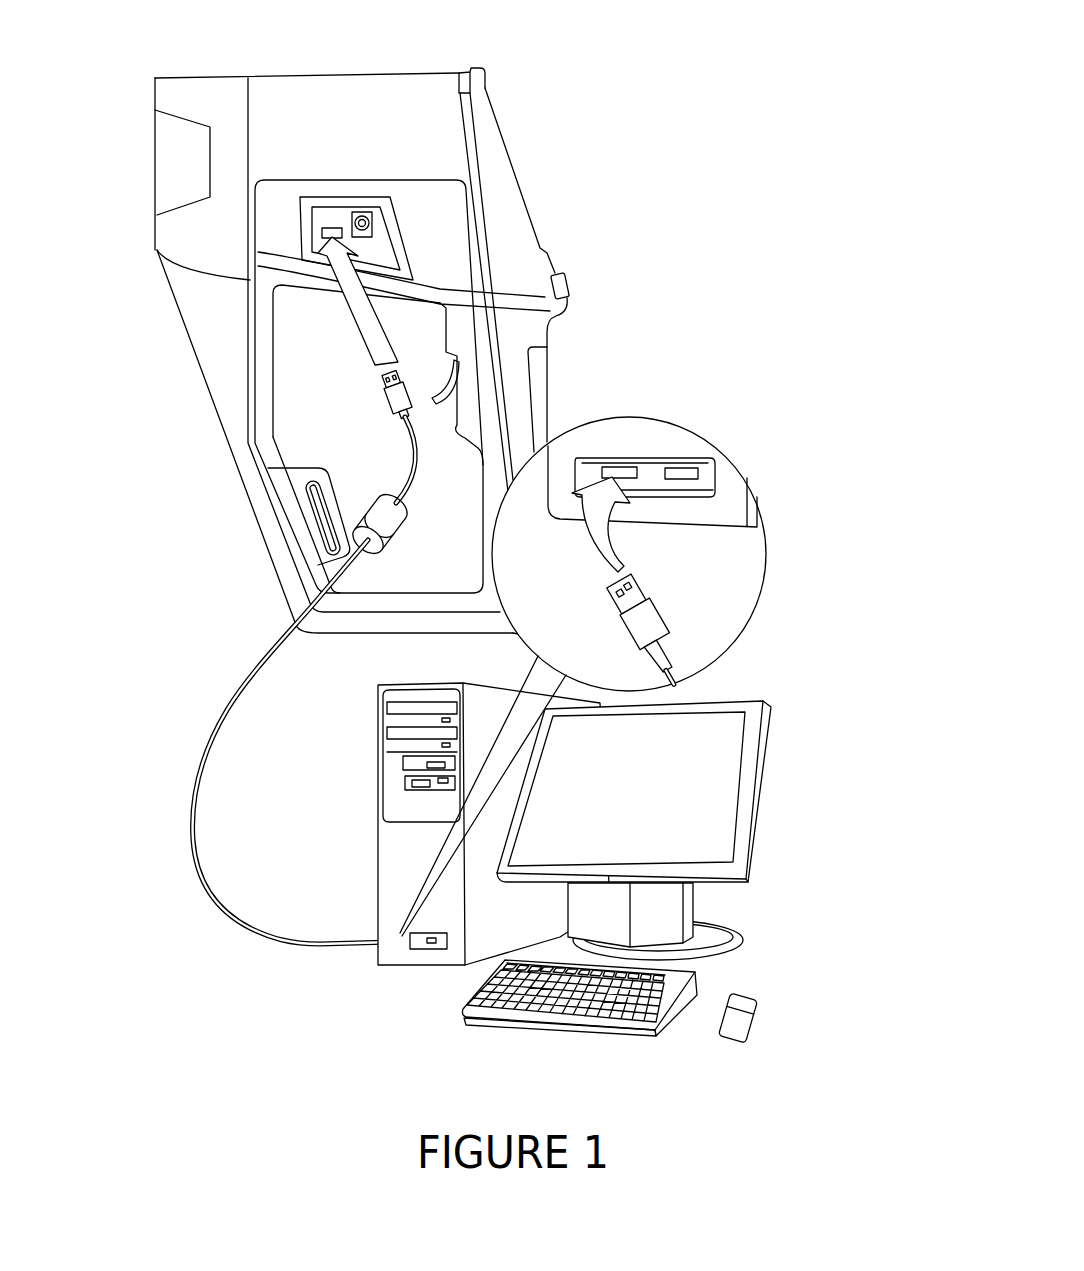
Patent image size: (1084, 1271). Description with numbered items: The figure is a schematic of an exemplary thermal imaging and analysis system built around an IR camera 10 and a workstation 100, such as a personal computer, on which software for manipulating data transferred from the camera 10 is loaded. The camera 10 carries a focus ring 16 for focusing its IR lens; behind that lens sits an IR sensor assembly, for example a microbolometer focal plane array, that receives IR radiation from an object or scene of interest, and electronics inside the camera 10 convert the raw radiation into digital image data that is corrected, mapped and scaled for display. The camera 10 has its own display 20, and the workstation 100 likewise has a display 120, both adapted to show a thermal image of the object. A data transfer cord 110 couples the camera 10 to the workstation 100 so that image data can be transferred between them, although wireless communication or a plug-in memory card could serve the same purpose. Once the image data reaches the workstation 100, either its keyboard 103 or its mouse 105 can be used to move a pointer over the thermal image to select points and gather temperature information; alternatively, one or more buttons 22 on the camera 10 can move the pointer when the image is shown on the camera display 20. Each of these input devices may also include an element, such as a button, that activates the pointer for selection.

The IR camera 10 is at (549, 79).
The focus ring 16 is at (155, 195).
The display 20 is at (532, 180).
The buttons 22 is at (572, 280).
The workstation 100 is at (820, 710).
The keyboard 103 is at (440, 1015).
The mouse 105 is at (758, 1027).
The data transfer cord 110 is at (217, 717).
The display 120 is at (694, 792).